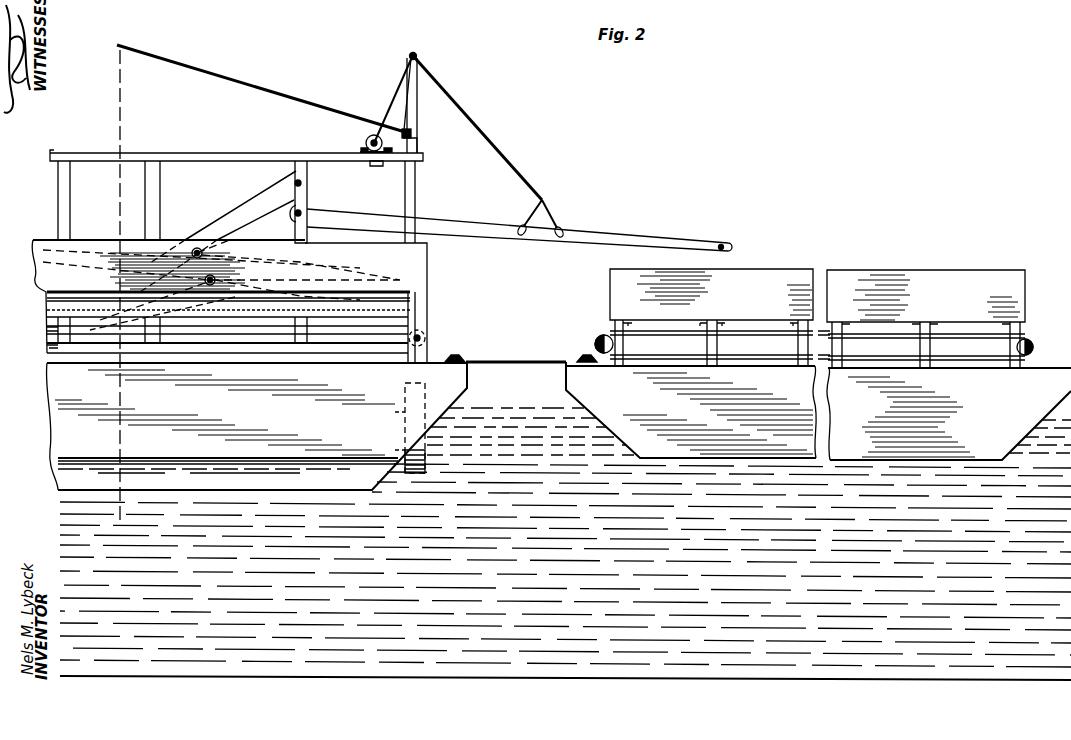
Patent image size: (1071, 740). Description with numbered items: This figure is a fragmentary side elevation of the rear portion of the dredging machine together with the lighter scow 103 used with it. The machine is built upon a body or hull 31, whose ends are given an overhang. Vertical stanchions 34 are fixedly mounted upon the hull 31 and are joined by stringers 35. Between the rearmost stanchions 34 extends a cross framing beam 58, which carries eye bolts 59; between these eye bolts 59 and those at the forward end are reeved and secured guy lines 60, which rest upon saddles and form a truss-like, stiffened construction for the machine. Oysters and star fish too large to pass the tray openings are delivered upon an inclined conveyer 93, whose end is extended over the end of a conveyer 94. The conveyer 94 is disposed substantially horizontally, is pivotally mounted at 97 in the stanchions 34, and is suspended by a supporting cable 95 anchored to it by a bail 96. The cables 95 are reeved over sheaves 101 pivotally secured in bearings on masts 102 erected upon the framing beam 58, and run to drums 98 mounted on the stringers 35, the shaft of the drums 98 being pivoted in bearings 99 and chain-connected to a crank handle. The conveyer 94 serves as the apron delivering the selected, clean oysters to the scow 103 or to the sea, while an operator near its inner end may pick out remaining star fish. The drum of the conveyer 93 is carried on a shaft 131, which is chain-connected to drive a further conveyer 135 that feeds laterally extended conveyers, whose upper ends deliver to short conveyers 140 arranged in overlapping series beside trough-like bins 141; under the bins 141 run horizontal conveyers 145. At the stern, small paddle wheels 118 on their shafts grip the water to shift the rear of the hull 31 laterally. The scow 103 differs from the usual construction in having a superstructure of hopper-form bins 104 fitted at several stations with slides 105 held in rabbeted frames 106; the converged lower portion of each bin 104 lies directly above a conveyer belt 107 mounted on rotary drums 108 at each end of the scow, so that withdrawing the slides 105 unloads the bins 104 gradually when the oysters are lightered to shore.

The hull 31 is at (58, 429).
The stanchions 34 is at (71, 210).
The stringers 35 is at (231, 156).
The cross framing beam 58 is at (418, 148).
The eye bolts 59 is at (402, 130).
The guy lines 60 is at (261, 88).
The conveyer 93 is at (241, 216).
The conveyer 94 is at (612, 230).
The supporting cable 95 is at (505, 158).
The bail 96 is at (548, 209).
The pivot of conveyer 94 97 is at (304, 211).
The drums 98 is at (366, 140).
The bearings 99 is at (380, 161).
The sheaves 101 is at (418, 56).
The masts 102 is at (419, 102).
The lighter scow 103 is at (584, 388).
The bins 104 is at (873, 280).
The slides 105 is at (762, 323).
The rabbeted frames 106 is at (631, 320).
The conveyer belt 107 is at (672, 347).
The rotary drums 108 is at (600, 339).
The paddle wheels 118 is at (404, 456).
The shaft 131 is at (304, 182).
The conveyer 135 is at (238, 279).
The short conveyers 140 is at (431, 268).
The trough-like bins 141 is at (400, 314).
The conveyers 145 is at (426, 337).